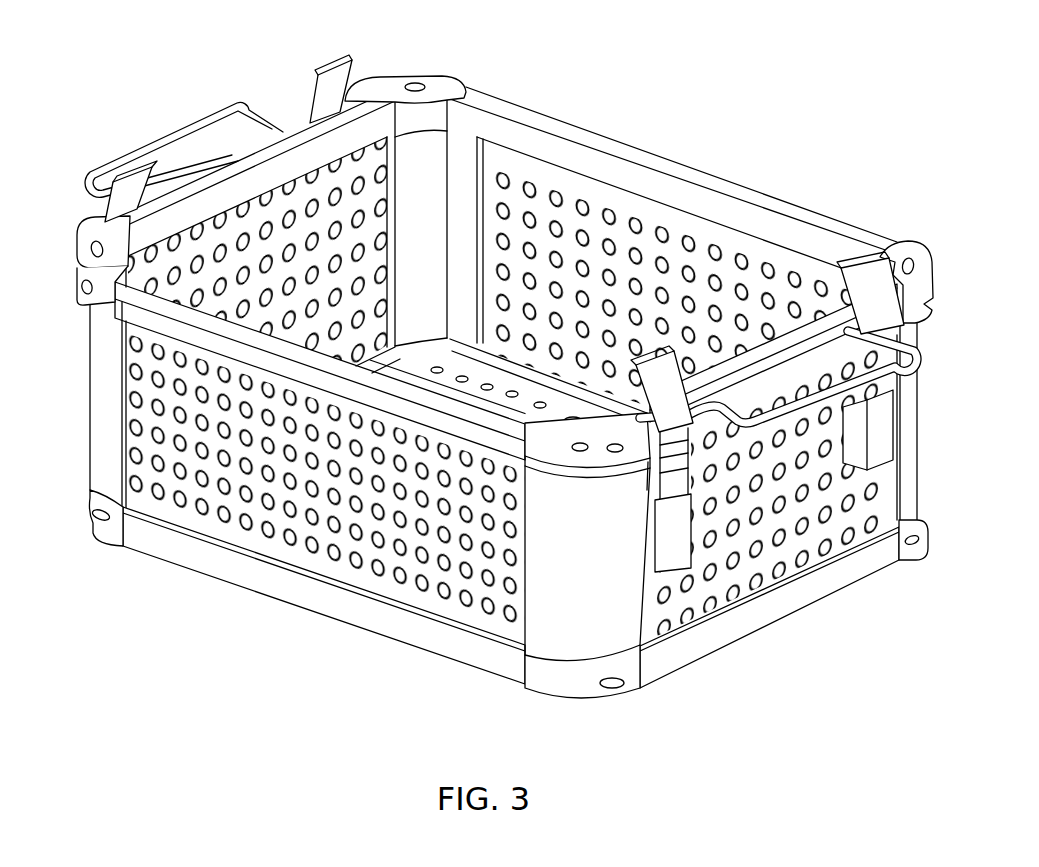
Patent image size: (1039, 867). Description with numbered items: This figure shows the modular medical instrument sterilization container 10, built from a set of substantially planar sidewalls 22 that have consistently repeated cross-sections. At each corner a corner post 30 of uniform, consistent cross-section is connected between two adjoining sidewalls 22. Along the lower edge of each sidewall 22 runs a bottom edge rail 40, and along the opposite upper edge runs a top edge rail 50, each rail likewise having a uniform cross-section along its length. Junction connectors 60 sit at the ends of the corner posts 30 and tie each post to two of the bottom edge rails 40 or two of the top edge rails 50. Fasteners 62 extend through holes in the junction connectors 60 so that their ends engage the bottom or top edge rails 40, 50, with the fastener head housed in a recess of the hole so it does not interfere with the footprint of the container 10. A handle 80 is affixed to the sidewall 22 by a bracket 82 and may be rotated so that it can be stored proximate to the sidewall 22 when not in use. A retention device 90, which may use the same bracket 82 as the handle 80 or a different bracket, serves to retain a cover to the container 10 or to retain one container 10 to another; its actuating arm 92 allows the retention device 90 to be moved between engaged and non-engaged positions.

The modular medical instrument sterilization container 10 is at (880, 70).
The sidewall 22 is at (632, 240).
The corner post 30 is at (103, 424).
The bottom edge rail 40 is at (316, 594).
The top edge rail 50 is at (131, 302).
The junction connector 60 is at (84, 237).
The fastener 62 is at (924, 302).
The handle 80 is at (222, 104).
The bracket 82 is at (642, 475).
The retention device 90 is at (318, 64).
The actuating arm 92 is at (888, 432).